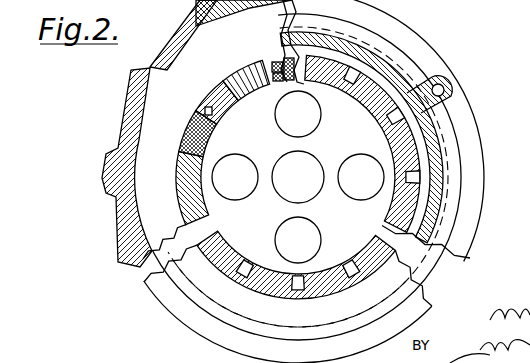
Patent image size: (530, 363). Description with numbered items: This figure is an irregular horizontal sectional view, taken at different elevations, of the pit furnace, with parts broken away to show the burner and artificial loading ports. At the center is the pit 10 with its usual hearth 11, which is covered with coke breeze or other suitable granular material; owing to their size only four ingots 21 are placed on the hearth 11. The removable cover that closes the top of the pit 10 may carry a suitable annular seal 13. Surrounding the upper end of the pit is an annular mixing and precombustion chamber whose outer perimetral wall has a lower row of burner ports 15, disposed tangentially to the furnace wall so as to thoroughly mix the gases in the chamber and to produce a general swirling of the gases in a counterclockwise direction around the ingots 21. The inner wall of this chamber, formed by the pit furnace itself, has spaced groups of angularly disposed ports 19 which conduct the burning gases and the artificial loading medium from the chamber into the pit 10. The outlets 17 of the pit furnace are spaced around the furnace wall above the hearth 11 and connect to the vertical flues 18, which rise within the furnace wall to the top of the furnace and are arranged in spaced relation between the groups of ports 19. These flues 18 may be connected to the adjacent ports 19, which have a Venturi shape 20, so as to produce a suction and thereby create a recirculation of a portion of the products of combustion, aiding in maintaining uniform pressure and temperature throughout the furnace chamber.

The pit 10 is at (376, 200).
The hearth 11 is at (393, 176).
The annular seal 13 is at (396, 114).
The burner ports 15 is at (118, 186).
The outlets 17 is at (296, 277).
The vertical flues 18 is at (251, 70).
The angularly disposed ports 19 is at (273, 61).
The Venturi shape 20 is at (190, 138).
The ingots 21 is at (306, 117).